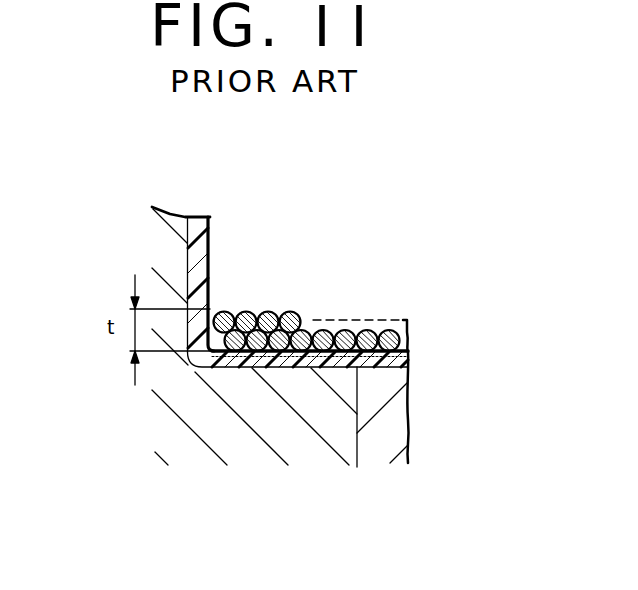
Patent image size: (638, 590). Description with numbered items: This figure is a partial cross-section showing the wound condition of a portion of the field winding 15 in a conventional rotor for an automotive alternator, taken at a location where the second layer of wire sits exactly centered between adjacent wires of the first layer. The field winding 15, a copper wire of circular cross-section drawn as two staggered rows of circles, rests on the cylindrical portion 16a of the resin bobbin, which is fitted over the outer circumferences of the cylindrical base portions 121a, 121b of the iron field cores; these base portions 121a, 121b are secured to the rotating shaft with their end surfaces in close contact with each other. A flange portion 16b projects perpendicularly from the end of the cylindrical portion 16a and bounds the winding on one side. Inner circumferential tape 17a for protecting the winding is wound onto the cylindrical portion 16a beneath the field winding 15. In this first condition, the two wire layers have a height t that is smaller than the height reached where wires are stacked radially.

The field winding 15 is at (292, 311).
The cylindrical portion 16a is at (375, 364).
The flange portion 16b is at (196, 217).
The inner circumferential tape 17a is at (408, 345).
The base portion 121a is at (253, 447).
The base portion 121b is at (388, 458).